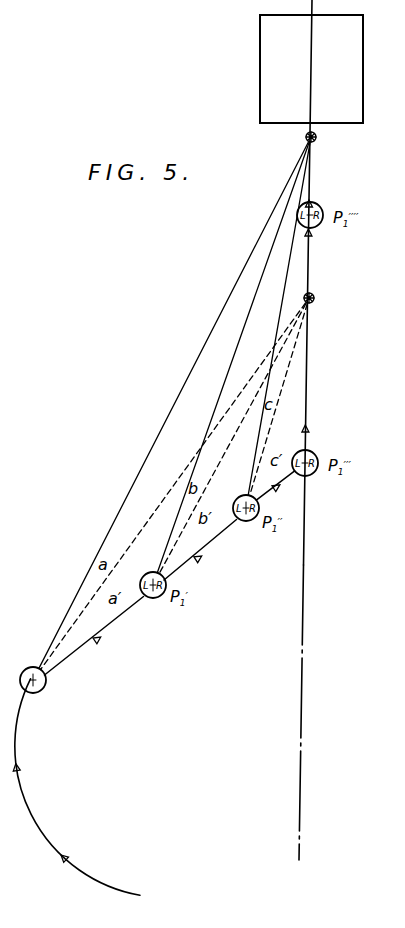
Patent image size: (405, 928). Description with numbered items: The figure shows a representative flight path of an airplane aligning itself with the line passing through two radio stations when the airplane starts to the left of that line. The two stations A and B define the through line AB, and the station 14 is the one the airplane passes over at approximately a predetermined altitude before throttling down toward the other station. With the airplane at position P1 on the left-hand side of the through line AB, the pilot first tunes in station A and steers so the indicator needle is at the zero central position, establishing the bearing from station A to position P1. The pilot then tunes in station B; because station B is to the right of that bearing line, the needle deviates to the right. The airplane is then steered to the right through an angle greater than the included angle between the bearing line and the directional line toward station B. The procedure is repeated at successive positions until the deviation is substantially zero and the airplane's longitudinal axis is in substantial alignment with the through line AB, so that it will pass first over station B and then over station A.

The station 14 is at (350, 70).
The station A is at (316, 137).
The station B is at (314, 298).
The position P1 is at (43, 685).